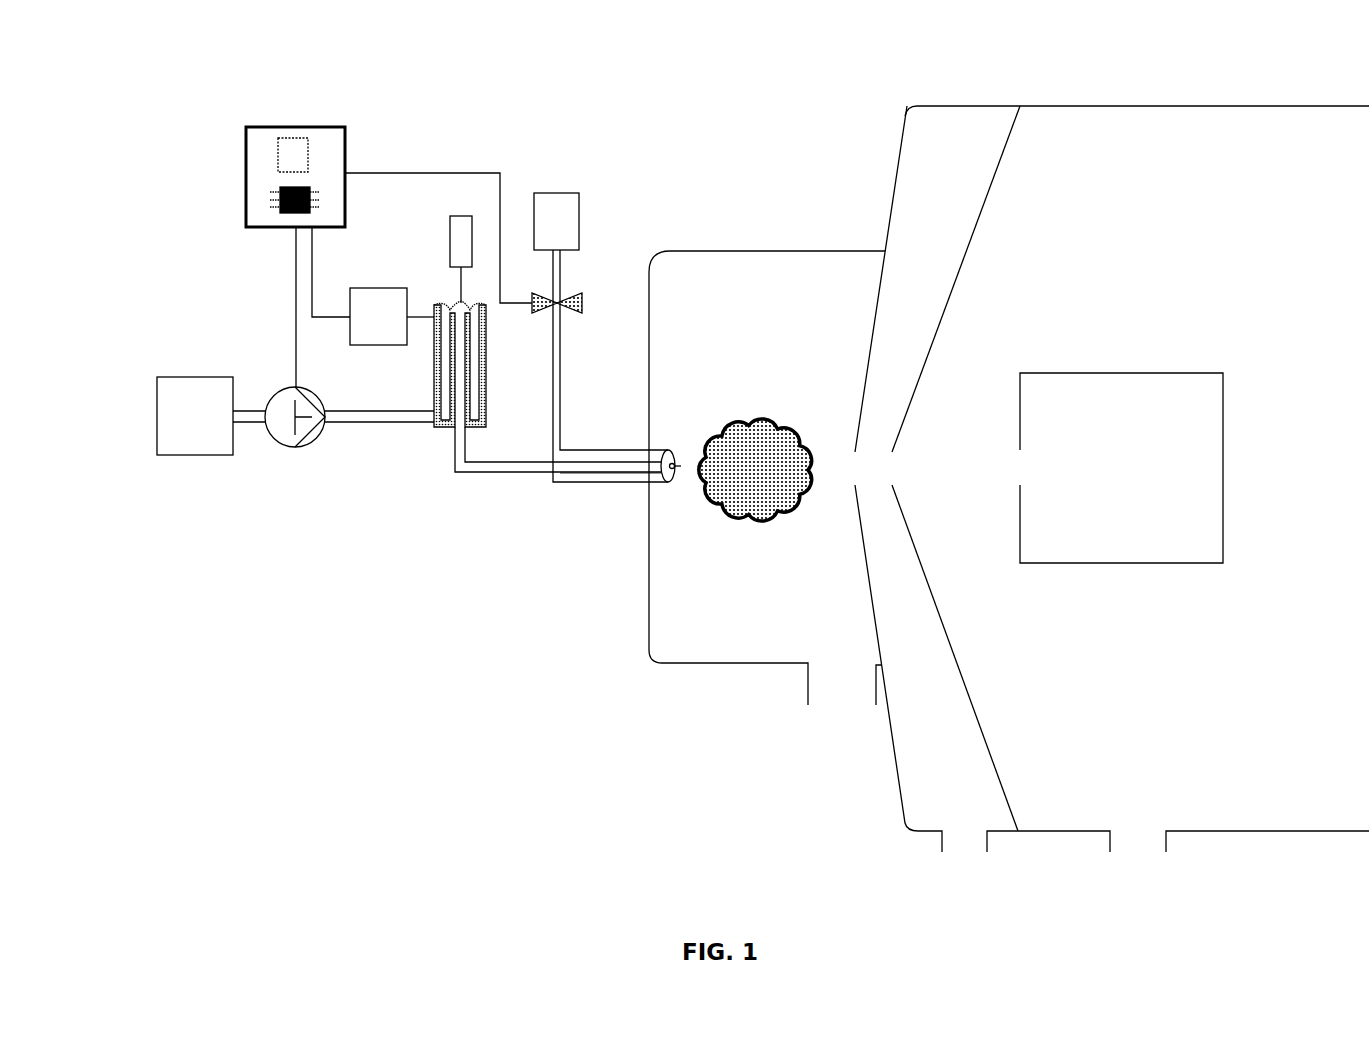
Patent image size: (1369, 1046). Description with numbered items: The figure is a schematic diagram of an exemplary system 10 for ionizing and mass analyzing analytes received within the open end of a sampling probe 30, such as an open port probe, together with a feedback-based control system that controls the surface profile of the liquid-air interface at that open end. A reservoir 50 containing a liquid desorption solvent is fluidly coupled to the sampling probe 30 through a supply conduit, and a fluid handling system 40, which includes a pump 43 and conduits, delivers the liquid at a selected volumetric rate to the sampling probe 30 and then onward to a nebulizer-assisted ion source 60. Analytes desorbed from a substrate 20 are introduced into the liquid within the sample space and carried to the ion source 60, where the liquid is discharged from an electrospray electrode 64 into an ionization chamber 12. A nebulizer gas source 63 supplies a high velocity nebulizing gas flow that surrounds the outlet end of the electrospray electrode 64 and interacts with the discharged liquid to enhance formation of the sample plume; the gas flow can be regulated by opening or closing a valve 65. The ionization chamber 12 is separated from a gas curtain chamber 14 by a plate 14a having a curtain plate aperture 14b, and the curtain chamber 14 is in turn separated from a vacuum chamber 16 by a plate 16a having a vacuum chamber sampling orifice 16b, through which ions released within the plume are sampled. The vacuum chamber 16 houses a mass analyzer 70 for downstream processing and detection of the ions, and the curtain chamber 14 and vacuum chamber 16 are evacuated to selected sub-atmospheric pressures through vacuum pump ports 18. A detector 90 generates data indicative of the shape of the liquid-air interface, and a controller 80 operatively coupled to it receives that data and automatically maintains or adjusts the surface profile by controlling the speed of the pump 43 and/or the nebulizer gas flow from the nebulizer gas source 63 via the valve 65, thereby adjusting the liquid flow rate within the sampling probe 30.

The system 10 is at (565, 136).
The ionization chamber 12 is at (767, 478).
The gas curtain chamber 14 is at (1112, 479).
The curtain plate 14a is at (868, 358).
The curtain plate aperture 14b is at (841, 462).
The vacuum chamber 16 is at (1130, 479).
The plate 16a is at (970, 242).
The vacuum chamber sampling orifice 16b is at (919, 462).
The vacuum pump port 18 is at (960, 872).
The substrate 20 is at (450, 225).
The sampling probe 30 is at (404, 370).
The fluid handling system 40 is at (413, 437).
The pump 43 is at (295, 447).
The reservoir 50 is at (195, 416).
The ion source 60 is at (570, 514).
The nebulizer gas source 63 is at (556, 221).
The electrospray electrode 64 is at (630, 480).
The valve 65 is at (582, 303).
The mass analyzer 70 is at (1121, 468).
The controller 80 is at (246, 150).
The detector 90 is at (392, 316).